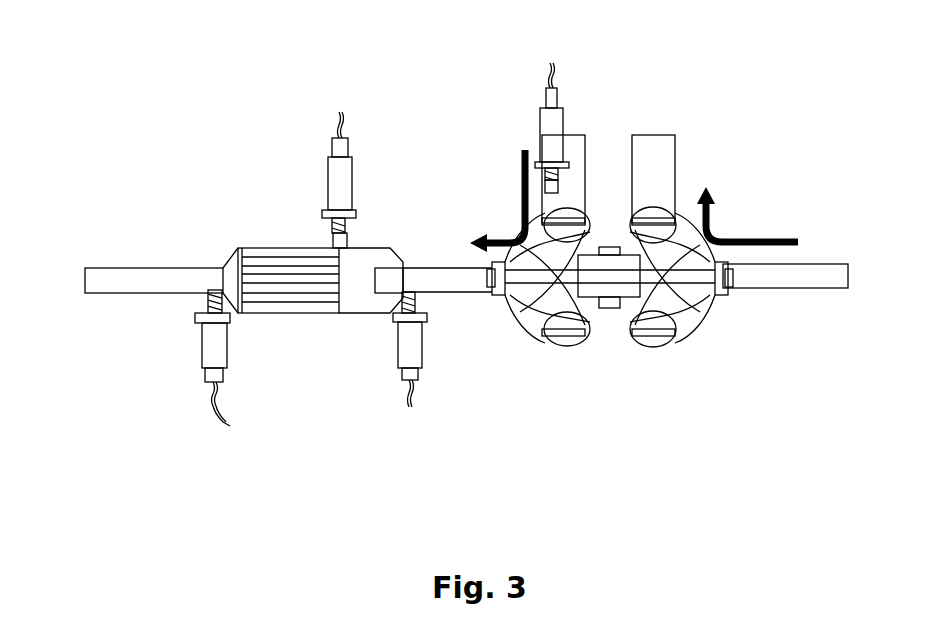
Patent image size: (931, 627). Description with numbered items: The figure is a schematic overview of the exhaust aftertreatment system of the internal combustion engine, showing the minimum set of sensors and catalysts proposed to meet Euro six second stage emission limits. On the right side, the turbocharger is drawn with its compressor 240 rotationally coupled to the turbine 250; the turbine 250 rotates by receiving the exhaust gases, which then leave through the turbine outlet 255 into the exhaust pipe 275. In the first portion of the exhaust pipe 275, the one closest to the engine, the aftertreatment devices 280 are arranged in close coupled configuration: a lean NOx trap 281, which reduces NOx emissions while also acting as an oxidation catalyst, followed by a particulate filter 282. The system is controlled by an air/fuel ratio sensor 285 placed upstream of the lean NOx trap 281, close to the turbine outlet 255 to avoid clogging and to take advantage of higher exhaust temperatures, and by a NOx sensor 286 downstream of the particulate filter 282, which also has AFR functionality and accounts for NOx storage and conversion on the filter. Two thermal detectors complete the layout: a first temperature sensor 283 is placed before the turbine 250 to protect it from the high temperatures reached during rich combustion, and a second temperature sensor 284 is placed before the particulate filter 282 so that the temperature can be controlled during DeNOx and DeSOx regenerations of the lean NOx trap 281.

The exhaust aftertreatment device 280 is at (166, 170).
The exhaust pipe 275 is at (158, 276).
The particulate filter 282 is at (293, 293).
The lean NOx trap 281 is at (355, 302).
The NOx sensor 286 is at (210, 337).
The air/fuel ratio sensor 285 is at (410, 347).
The second temperature sensor 284 is at (338, 177).
The first temperature sensor 283 is at (556, 125).
The turbine 250 is at (542, 300).
The turbine outlet 255 is at (495, 290).
The compressor 240 is at (673, 248).